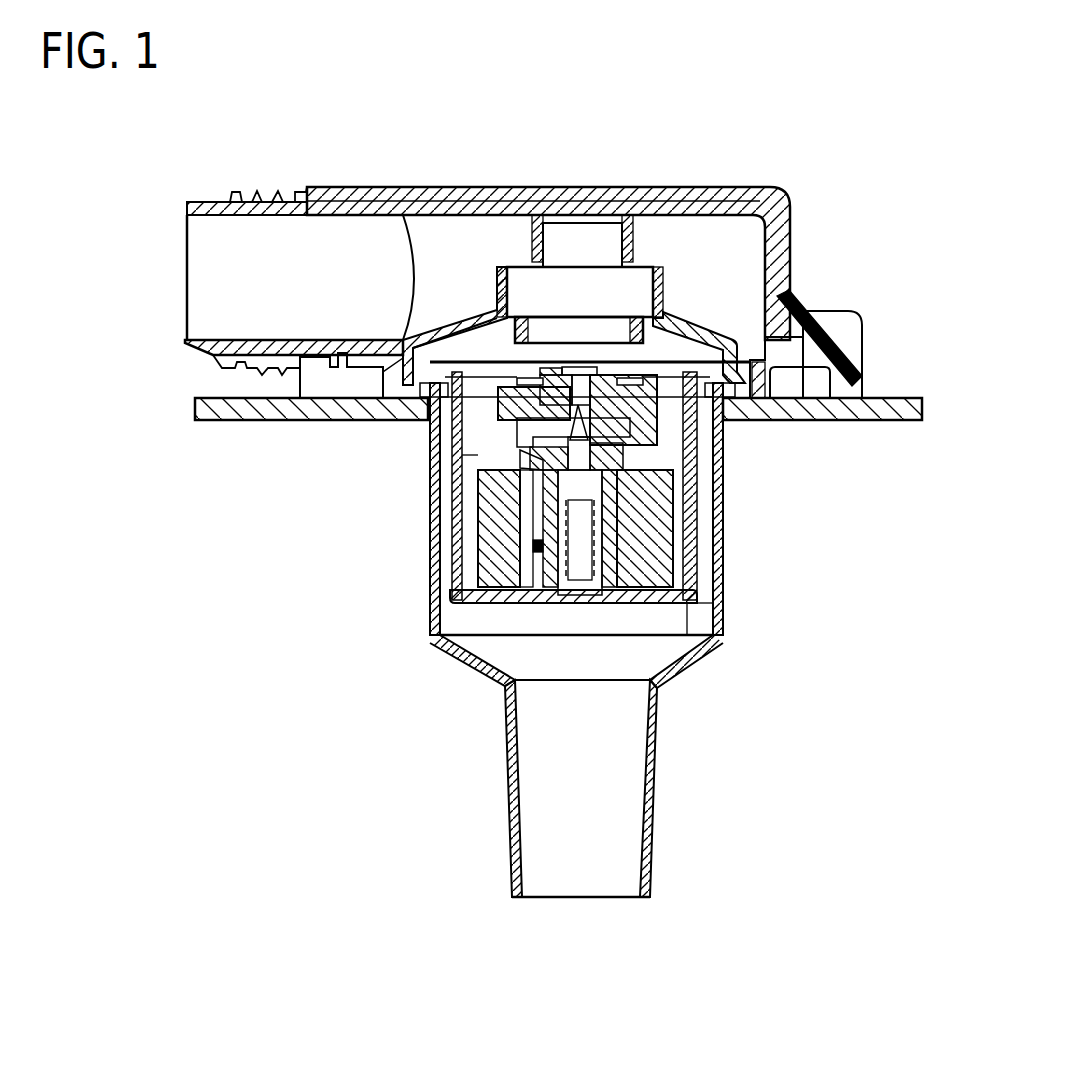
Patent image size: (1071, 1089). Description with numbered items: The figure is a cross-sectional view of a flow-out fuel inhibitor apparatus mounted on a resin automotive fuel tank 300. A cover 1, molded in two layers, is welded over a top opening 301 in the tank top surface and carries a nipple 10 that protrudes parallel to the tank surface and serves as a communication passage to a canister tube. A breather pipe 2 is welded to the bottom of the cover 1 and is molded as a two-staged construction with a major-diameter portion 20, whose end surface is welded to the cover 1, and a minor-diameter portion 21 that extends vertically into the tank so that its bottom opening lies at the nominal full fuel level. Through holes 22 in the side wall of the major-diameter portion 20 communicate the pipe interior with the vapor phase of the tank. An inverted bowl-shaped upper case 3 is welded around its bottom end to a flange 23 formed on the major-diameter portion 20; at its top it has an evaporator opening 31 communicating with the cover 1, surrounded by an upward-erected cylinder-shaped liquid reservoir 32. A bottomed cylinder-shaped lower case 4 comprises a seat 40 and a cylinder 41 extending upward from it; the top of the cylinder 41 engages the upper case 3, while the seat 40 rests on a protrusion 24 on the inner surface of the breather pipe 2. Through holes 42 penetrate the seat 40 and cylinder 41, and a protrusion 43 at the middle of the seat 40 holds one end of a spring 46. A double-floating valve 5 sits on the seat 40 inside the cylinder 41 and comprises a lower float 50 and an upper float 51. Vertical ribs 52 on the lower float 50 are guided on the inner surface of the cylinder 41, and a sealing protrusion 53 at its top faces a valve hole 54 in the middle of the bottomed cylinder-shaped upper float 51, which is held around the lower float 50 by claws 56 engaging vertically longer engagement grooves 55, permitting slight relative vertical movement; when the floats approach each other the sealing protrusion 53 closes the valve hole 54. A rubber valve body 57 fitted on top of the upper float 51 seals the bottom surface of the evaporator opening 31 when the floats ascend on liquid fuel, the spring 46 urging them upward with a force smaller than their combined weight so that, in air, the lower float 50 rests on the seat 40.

The cover 1 is at (497, 197).
The breather pipe 2 is at (728, 607).
The upper case 3 is at (650, 393).
The lower case 4 is at (460, 455).
The double-floating valve 5 is at (500, 588).
The nipple 10 is at (215, 197).
The major-diameter portion 20 is at (723, 572).
The minor-diameter portion 21 is at (650, 790).
The through holes 22 is at (723, 412).
The flange 23 is at (780, 380).
The protrusion 24 is at (703, 622).
The evaporator opening 31 is at (561, 335).
The liquid reservoir 32 is at (497, 300).
The seat 40 is at (488, 603).
The cylinder 41 is at (687, 517).
The through holes 42 is at (663, 598).
The protrusion 43 is at (587, 592).
The spring 46 is at (610, 553).
The lower float 50 is at (510, 555).
The upper float 51 is at (660, 383).
The ribs 52 is at (640, 452).
The sealing protrusion 53 is at (560, 435).
The valve hole 54 is at (582, 368).
The engagement grooves 55 is at (535, 545).
The claws 56 is at (545, 465).
The valve body 57 is at (470, 327).
The fuel tank 300 is at (233, 421).
The top opening 301 is at (393, 410).